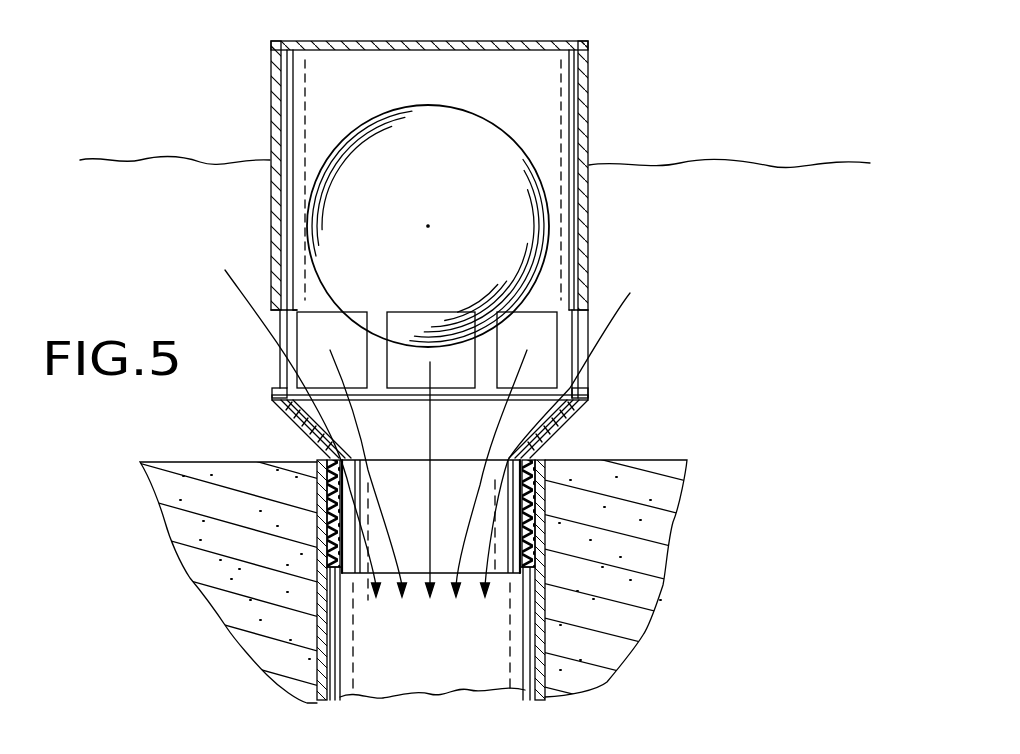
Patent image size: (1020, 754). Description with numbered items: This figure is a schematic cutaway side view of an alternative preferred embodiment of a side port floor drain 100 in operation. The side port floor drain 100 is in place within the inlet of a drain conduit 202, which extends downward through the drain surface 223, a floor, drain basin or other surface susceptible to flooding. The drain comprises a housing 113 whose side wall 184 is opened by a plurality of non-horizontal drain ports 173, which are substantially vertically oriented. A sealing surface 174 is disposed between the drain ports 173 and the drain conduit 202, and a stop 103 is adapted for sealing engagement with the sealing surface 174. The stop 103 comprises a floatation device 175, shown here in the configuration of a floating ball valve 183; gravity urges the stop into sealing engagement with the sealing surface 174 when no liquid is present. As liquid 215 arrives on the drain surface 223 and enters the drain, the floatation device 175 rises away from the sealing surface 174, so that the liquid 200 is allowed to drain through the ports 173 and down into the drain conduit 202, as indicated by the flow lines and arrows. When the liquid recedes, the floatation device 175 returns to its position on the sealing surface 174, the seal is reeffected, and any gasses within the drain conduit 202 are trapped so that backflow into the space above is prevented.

The side port floor drain 100 is at (690, 108).
The stop 103 is at (452, 137).
The housing 113 is at (281, 88).
The drain ports 173 is at (548, 308).
The sealing surface 174 is at (345, 450).
The floatation device 175 is at (407, 127).
The floating ball valve 183 is at (337, 153).
The side wall 184 is at (588, 88).
The liquid 200 is at (427, 458).
The drain conduit 202 is at (550, 638).
The liquid 215 is at (800, 162).
The drain surface 223 is at (670, 460).